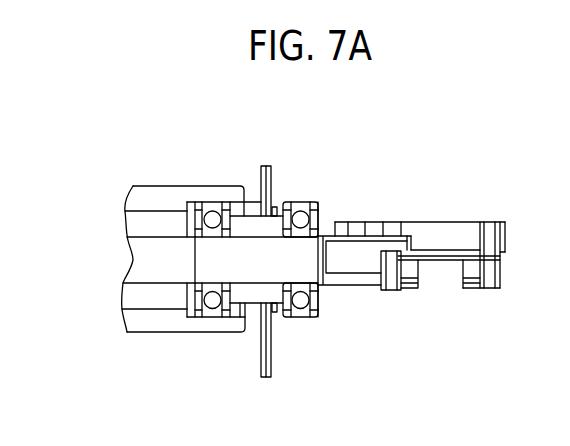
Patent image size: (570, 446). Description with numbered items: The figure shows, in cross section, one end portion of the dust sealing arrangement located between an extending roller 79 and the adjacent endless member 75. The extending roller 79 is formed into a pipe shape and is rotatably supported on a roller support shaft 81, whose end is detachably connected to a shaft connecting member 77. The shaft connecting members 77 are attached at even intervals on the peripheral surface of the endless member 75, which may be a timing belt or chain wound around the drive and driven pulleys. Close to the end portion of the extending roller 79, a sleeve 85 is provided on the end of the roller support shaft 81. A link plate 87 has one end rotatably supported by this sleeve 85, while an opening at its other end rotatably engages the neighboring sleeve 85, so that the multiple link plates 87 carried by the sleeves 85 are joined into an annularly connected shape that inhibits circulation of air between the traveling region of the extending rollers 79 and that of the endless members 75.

The endless member 75 is at (438, 262).
The shaft connecting member 77 is at (439, 232).
The extending roller 79 is at (149, 196).
The roller support shaft 81 is at (138, 248).
The sleeve 85 is at (250, 212).
The link plate 87 is at (271, 179).